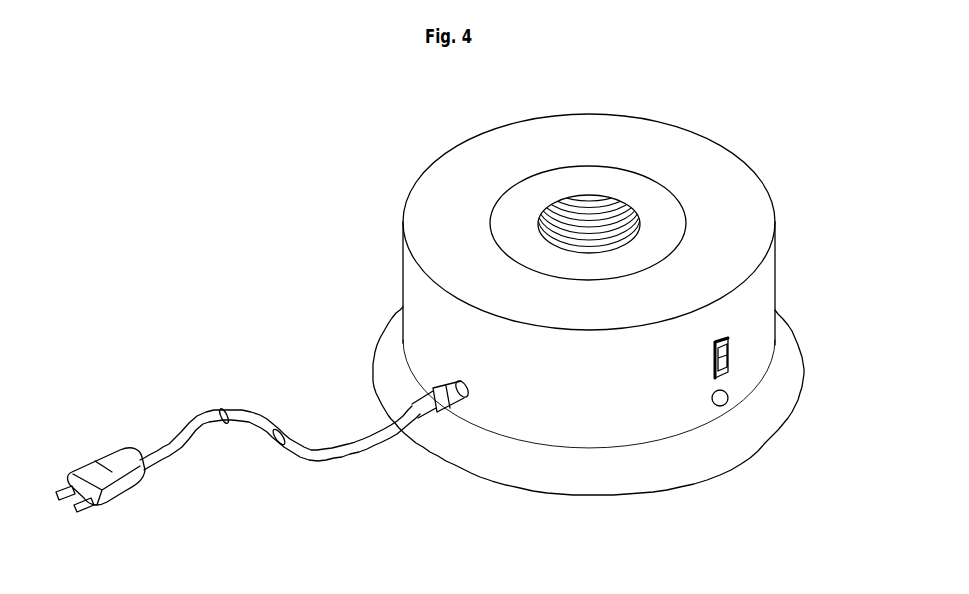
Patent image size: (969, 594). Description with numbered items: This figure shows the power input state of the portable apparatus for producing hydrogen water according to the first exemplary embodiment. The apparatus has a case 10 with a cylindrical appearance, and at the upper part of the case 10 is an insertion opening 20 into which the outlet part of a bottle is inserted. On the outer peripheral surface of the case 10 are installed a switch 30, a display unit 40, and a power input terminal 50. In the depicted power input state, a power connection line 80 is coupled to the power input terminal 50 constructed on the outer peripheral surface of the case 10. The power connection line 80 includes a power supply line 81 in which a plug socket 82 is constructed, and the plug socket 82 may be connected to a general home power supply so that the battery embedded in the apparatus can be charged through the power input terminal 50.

The case 10 is at (743, 203).
The insertion opening 20 is at (587, 210).
The switch 30 is at (733, 352).
The display unit 40 is at (723, 400).
The power input terminal 50 is at (468, 396).
The power connection line 80 is at (295, 443).
The power supply line 81 is at (278, 432).
The plug socket 82 is at (122, 453).